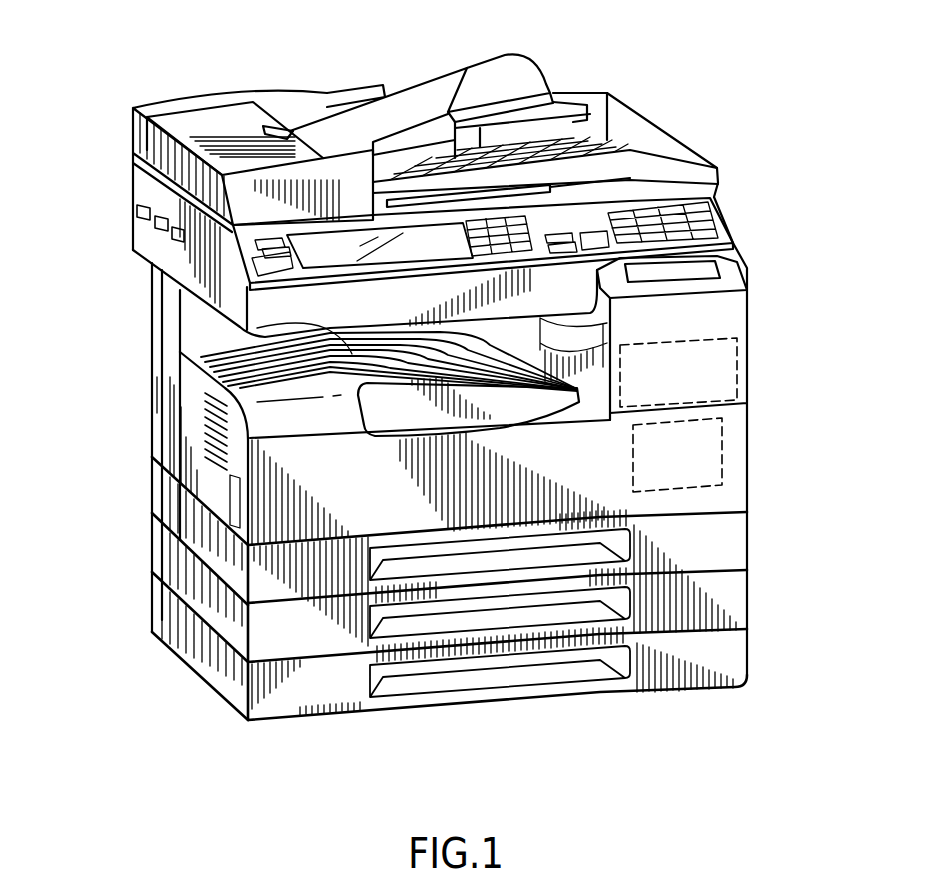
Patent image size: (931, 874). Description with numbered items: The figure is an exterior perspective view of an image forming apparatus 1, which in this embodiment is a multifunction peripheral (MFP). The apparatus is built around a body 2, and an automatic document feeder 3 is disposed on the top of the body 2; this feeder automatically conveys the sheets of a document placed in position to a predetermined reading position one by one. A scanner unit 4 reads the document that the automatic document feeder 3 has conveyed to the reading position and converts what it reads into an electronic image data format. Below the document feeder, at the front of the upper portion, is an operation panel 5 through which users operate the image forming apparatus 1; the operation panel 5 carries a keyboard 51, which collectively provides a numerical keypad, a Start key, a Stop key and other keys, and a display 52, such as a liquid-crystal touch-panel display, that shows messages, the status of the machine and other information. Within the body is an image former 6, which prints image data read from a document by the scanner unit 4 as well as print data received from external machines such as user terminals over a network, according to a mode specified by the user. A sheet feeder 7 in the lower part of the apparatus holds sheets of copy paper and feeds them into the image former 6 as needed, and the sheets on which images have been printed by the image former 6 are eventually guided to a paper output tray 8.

The image forming apparatus 1 is at (742, 152).
The body 2 is at (748, 455).
The automatic document feeder 3 is at (198, 123).
The scanner unit 4 is at (147, 235).
The operation panel 5 is at (520, 223).
The keyboard 51 is at (533, 227).
The display 52 is at (353, 245).
The image former 6 is at (180, 428).
The sheet feeder 7 is at (170, 557).
The paper output tray 8 is at (345, 324).